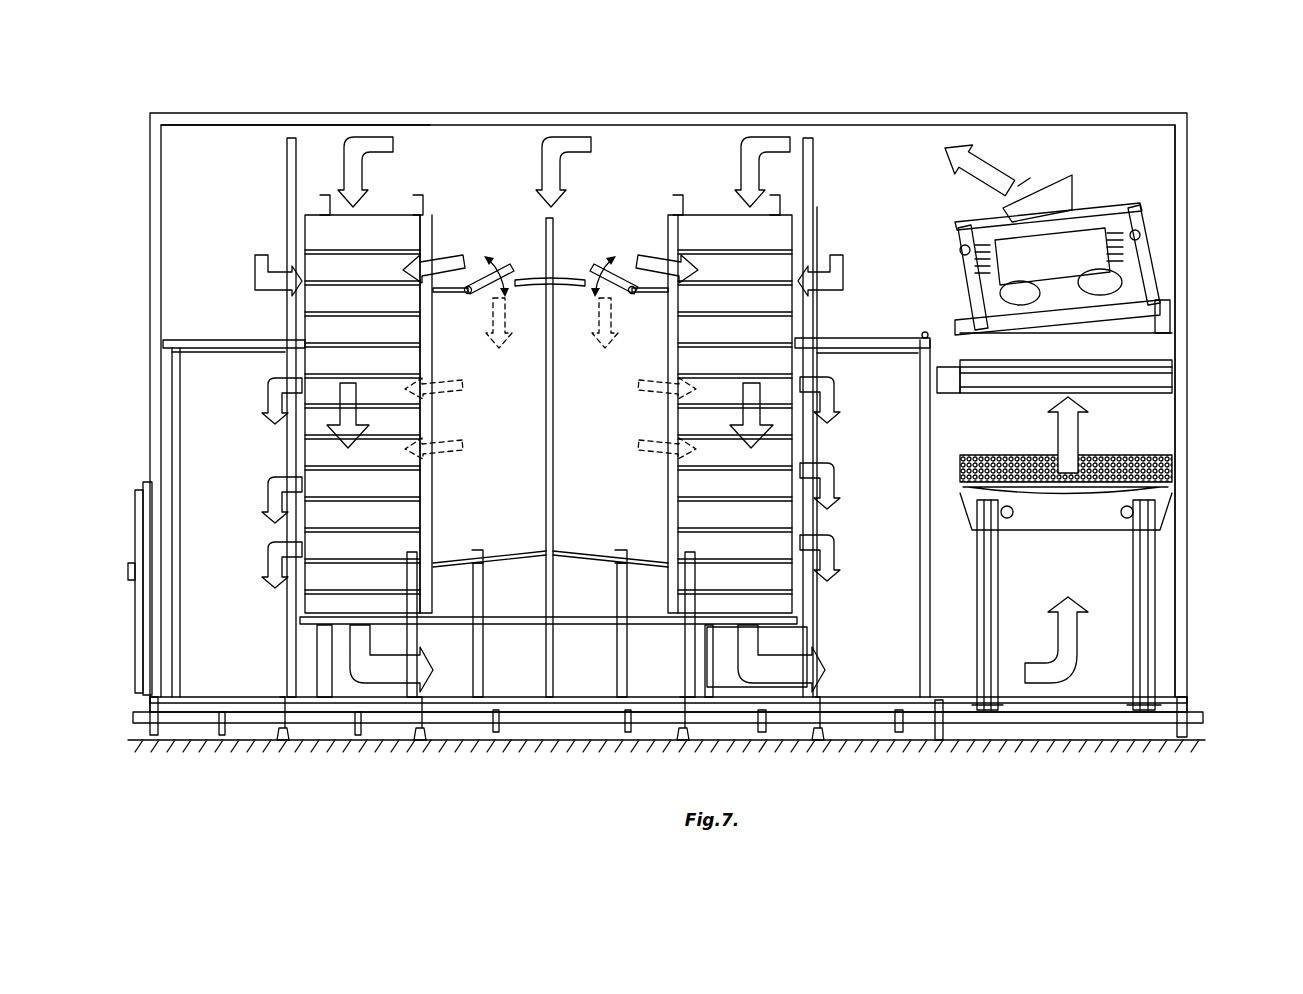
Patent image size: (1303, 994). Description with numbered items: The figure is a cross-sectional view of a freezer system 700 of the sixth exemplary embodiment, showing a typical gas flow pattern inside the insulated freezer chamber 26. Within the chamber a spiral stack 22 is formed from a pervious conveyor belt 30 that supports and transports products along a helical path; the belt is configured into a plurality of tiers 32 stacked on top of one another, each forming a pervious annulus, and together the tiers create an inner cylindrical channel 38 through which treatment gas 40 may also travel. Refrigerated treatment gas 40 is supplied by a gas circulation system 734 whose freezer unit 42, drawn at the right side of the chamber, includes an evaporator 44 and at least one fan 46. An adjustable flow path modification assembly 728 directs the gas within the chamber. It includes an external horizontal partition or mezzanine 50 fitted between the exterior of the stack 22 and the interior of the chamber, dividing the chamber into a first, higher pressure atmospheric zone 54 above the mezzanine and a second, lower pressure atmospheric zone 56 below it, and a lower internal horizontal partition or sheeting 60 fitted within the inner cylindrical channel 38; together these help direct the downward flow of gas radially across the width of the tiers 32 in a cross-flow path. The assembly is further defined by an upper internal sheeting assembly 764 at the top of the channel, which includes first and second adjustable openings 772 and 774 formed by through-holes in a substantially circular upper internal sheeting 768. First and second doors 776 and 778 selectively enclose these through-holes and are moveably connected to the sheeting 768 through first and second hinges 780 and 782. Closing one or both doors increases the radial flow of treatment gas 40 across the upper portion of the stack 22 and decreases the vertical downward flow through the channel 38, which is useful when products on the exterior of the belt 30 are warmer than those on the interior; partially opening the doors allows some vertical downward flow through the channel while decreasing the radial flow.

The freezer system 700 is at (1250, 136).
The adjustable flow path modification assembly 728 is at (232, 170).
The first, higher pressure atmospheric zone 54 is at (217, 224).
The external horizontal partition or mezzanine 50 is at (215, 340).
The second, lower pressure atmospheric zone 56 is at (217, 526).
The spiral stack 22 is at (399, 215).
The inner cylindrical channel 38 is at (458, 237).
The pervious conveyor belt 30 is at (669, 215).
The tiers 32 is at (727, 253).
The lower internal horizontal partition or sheeting 60 is at (583, 560).
The upper internal sheeting assembly 764 is at (488, 252).
The first adjustable opening 772 is at (517, 276).
The second adjustable opening 774 is at (581, 276).
The upper internal sheeting 768 is at (447, 296).
The first hinge 780 is at (465, 294).
The second hinge 782 is at (632, 294).
The first door 776 is at (500, 272).
The second door 778 is at (594, 294).
The gas circulation system 734 is at (869, 170).
The treatment gas 40 is at (982, 168).
The freezer unit 42 is at (1152, 228).
The fan 46 is at (1145, 278).
The evaporator 44 is at (1175, 412).
The insulated freezer chamber 26 is at (1187, 590).